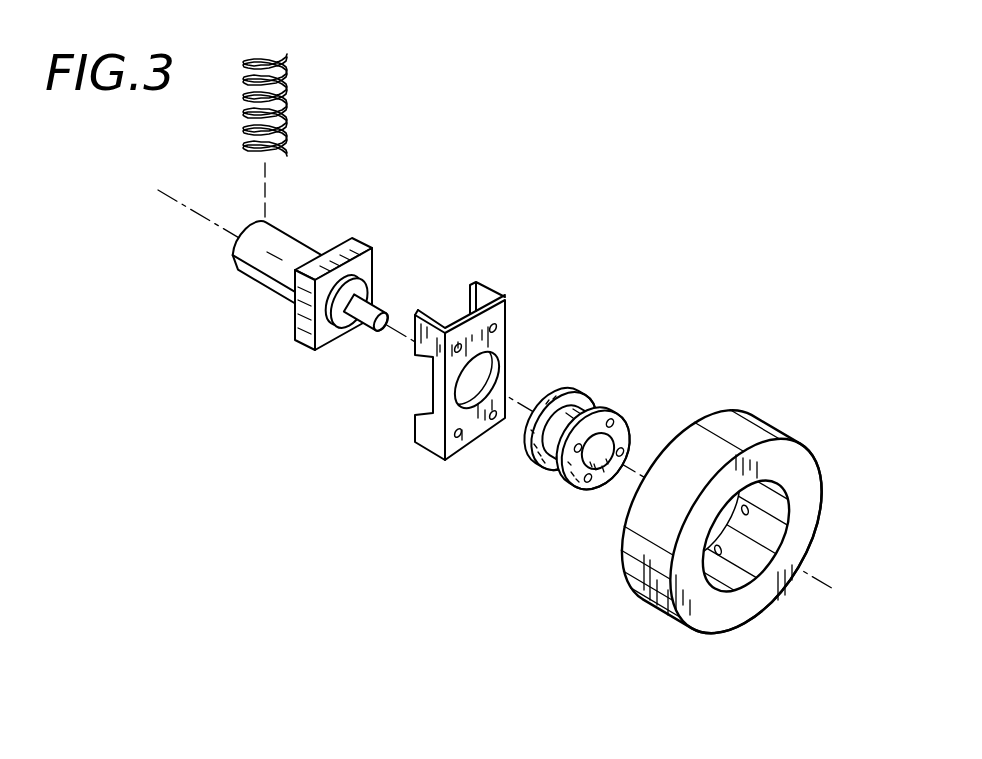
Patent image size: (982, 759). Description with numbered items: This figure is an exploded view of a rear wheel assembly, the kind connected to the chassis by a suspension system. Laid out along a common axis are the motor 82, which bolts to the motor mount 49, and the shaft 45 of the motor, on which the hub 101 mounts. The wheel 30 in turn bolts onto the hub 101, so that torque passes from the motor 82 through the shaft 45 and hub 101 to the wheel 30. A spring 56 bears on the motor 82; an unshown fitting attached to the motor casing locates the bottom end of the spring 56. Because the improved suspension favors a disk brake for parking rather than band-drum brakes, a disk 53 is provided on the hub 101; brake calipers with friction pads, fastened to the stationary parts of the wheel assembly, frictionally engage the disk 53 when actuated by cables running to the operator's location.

The spring 56 is at (280, 92).
The motor 82 is at (303, 240).
The shaft 45 is at (377, 310).
The motor mount 49 is at (508, 317).
The disk 53 is at (587, 398).
The hub 101 is at (600, 488).
The wheel 30 is at (782, 432).